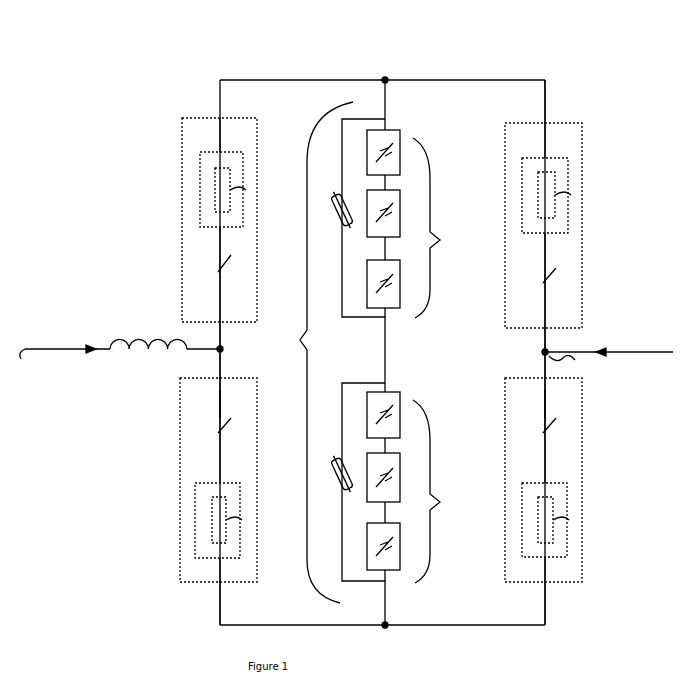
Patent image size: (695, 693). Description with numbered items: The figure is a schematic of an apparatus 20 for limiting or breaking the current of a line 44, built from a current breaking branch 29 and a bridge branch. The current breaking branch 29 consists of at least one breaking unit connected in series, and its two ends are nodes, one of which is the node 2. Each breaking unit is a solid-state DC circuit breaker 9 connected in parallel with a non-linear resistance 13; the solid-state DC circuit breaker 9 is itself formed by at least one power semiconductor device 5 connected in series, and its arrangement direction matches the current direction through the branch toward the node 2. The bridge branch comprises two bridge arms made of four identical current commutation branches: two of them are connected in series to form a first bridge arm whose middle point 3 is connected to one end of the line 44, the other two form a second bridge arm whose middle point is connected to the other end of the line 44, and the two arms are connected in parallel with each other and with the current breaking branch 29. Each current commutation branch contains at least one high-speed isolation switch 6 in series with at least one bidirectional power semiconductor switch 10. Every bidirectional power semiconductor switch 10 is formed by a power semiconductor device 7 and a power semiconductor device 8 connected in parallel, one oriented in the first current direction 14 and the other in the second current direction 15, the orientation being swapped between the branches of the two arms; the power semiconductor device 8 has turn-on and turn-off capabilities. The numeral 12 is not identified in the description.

The node 2 is at (608, 404).
The middle point of the bridge arm 3 is at (414, 600).
The power semiconductor device 5 is at (420, 485).
The high-speed isolation switch 6 is at (431, 360).
The power semiconductor device 7 is at (591, 506).
The power semiconductor device 8 is at (504, 542).
The solid-state DC circuit breaker 9 is at (575, 256).
The bidirectional power semiconductor switch 10 is at (569, 465).
The disconnector 12 is at (577, 406).
The non-linear resistance 13 is at (330, 448).
The first current direction 14 is at (66, 347).
The second current direction 15 is at (602, 350).
The apparatus 20 is at (450, 61).
The current breaking branch 29 is at (224, 351).
The line 44 is at (21, 359).